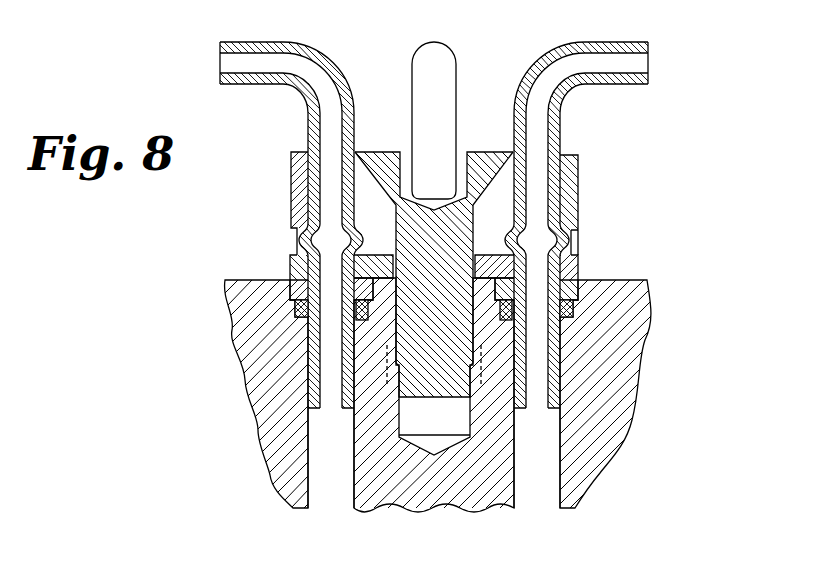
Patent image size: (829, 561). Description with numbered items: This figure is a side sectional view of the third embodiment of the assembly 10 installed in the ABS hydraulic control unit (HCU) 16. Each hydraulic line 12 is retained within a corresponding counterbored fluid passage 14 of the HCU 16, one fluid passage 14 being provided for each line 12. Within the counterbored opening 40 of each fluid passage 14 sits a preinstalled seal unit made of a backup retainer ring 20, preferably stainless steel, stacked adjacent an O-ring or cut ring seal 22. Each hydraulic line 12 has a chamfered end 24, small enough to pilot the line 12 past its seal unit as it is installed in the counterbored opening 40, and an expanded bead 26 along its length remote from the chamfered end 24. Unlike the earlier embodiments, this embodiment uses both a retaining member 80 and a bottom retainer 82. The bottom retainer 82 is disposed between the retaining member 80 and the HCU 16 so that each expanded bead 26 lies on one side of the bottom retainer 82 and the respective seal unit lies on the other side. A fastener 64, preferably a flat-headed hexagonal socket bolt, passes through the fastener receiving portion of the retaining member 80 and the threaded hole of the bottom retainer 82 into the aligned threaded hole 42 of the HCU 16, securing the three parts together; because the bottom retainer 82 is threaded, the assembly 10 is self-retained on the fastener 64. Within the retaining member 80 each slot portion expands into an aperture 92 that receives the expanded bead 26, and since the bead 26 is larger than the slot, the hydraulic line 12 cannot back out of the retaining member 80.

The assembly 10 is at (487, 99).
The hydraulic line 12 is at (232, 42).
The fluid passage 14 is at (322, 468).
The hydraulic control unit 16 is at (597, 430).
The backup retainer ring 20 is at (578, 292).
The seal 22 is at (571, 316).
The chamfered end 24 is at (312, 412).
The expanded bead 26 is at (297, 232).
The counterbored opening 40 is at (228, 300).
The threaded hole 42 is at (467, 420).
The fastener 64 is at (383, 150).
The retaining member 80 is at (570, 168).
The bottom retainer 82 is at (572, 272).
The aperture 92 is at (668, 556).